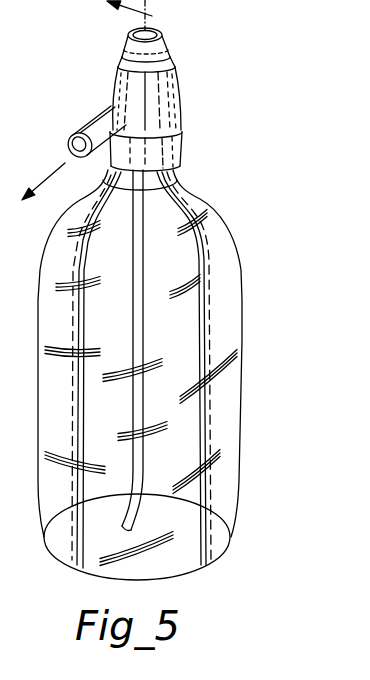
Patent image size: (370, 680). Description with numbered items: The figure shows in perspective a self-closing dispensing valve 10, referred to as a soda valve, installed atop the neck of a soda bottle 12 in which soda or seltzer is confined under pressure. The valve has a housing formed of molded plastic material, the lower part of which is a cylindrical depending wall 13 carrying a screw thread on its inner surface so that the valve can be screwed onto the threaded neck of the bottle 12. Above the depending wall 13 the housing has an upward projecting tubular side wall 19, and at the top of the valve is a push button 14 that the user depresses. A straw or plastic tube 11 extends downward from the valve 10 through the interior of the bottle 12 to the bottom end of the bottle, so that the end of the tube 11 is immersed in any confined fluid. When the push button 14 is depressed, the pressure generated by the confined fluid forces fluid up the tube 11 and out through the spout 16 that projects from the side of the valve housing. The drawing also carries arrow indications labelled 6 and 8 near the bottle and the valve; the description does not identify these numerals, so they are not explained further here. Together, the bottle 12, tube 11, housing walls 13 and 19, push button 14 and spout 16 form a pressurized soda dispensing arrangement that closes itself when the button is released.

The direction of bottle rotation / left refraction region 6 is at (98, 214).
The direction indicator arrow 8 is at (140, 8).
The dispensing valve 10 is at (197, 100).
The plastic tube 11 is at (143, 352).
The soda bottle 12 is at (257, 317).
The cylindrical depending wall 13 is at (181, 143).
The push button 14 is at (168, 50).
The spout 16 is at (79, 132).
The tubular side wall 19 is at (113, 72).